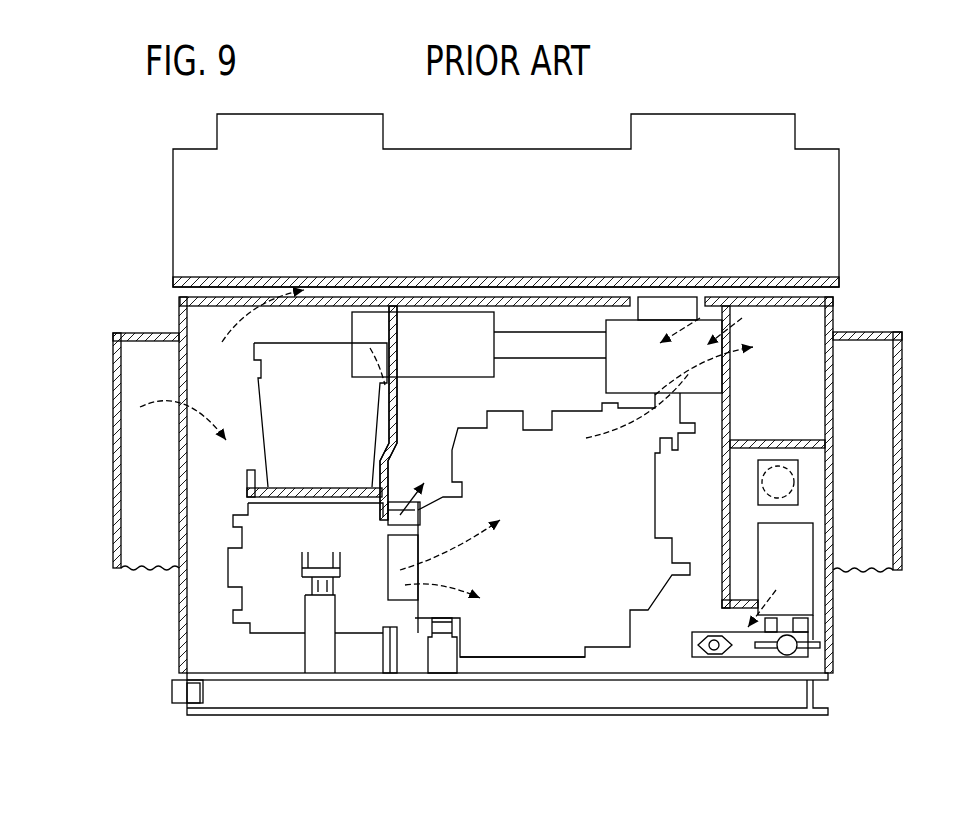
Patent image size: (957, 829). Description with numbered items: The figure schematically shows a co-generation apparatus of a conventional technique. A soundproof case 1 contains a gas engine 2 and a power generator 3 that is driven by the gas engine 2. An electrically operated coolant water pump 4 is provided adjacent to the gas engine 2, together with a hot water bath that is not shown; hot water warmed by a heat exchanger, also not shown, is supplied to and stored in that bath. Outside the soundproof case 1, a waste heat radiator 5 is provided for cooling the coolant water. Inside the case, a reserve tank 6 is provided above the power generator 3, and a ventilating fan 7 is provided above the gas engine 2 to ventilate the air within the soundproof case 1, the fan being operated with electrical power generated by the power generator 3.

The soundproof case 1 is at (846, 293).
The gas engine 2 is at (553, 642).
The power generator 3 is at (270, 615).
The electrically operated coolant water pump 4 is at (772, 542).
The waste heat radiator 5 is at (812, 161).
The reserve tank 6 is at (290, 381).
The ventilating fan 7 is at (612, 371).